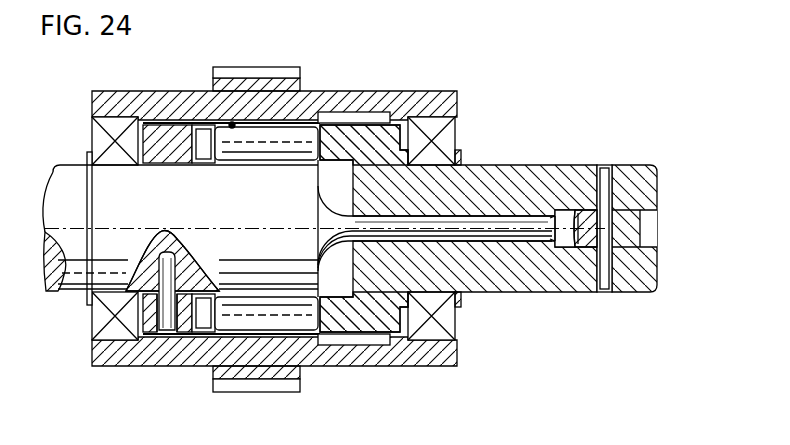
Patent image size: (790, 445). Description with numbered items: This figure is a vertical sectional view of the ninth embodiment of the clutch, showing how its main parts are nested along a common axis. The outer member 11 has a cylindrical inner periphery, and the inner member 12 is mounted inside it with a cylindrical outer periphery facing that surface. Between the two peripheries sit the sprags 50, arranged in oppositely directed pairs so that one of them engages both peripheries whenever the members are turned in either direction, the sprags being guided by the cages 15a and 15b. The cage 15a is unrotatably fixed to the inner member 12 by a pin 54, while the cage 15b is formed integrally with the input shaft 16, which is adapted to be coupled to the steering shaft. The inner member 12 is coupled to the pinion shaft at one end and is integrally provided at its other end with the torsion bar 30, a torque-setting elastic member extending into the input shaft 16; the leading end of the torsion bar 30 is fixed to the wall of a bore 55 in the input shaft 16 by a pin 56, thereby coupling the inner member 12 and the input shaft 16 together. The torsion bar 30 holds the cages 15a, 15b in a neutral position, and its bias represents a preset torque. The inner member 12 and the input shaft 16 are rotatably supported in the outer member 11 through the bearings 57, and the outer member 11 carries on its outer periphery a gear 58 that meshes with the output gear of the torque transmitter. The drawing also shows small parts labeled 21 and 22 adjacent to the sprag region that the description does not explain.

The outer member 11 is at (385, 97).
The inner member 12 is at (300, 253).
The cage 15a is at (173, 133).
The cage 15b is at (330, 138).
The input shaft 16 is at (520, 172).
The ball 21 is at (231, 122).
The ring member 22 is at (228, 160).
The torsion bar 30 is at (468, 222).
The sprag 50 is at (288, 135).
The pin 54 is at (162, 332).
The bore 55 is at (545, 210).
The pin 56 is at (608, 167).
The bearings 57 is at (105, 125).
The gear 58 is at (225, 385).